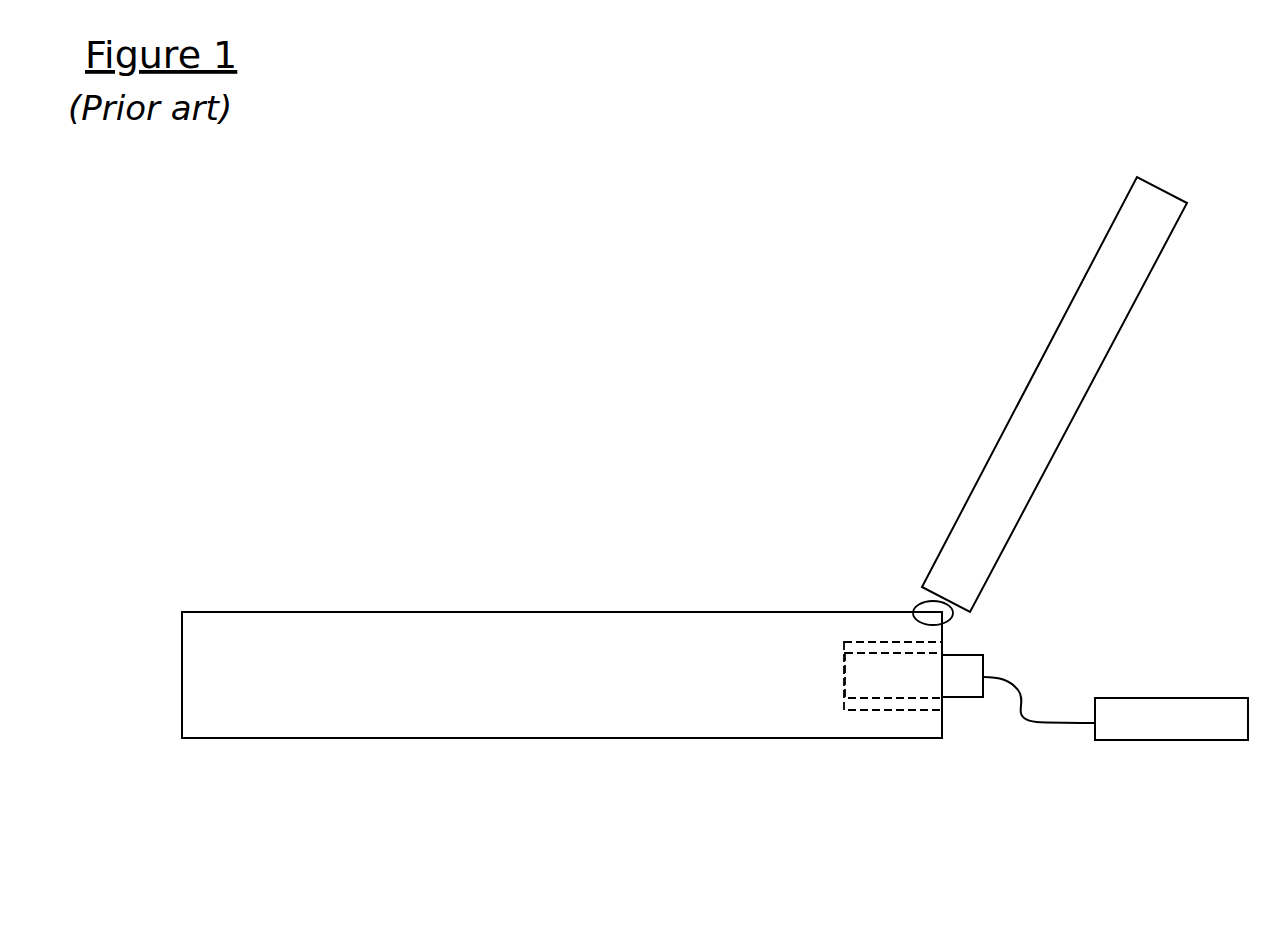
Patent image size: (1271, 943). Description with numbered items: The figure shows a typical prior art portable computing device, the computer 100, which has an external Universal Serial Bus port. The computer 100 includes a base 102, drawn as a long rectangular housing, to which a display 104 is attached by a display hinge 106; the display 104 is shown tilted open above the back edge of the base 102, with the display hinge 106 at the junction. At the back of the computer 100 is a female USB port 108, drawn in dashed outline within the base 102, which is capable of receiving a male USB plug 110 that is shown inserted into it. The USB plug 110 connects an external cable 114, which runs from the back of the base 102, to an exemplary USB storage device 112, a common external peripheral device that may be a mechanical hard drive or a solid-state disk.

The computer 100 is at (252, 419).
The base 102 is at (562, 675).
The display 104 is at (1073, 298).
The display hinge 106 is at (953, 616).
The USB port (female) 108 is at (862, 710).
The USB plug (male) 110 is at (895, 683).
The USB storage device 112 is at (1180, 740).
The external cable 114 is at (1034, 739).